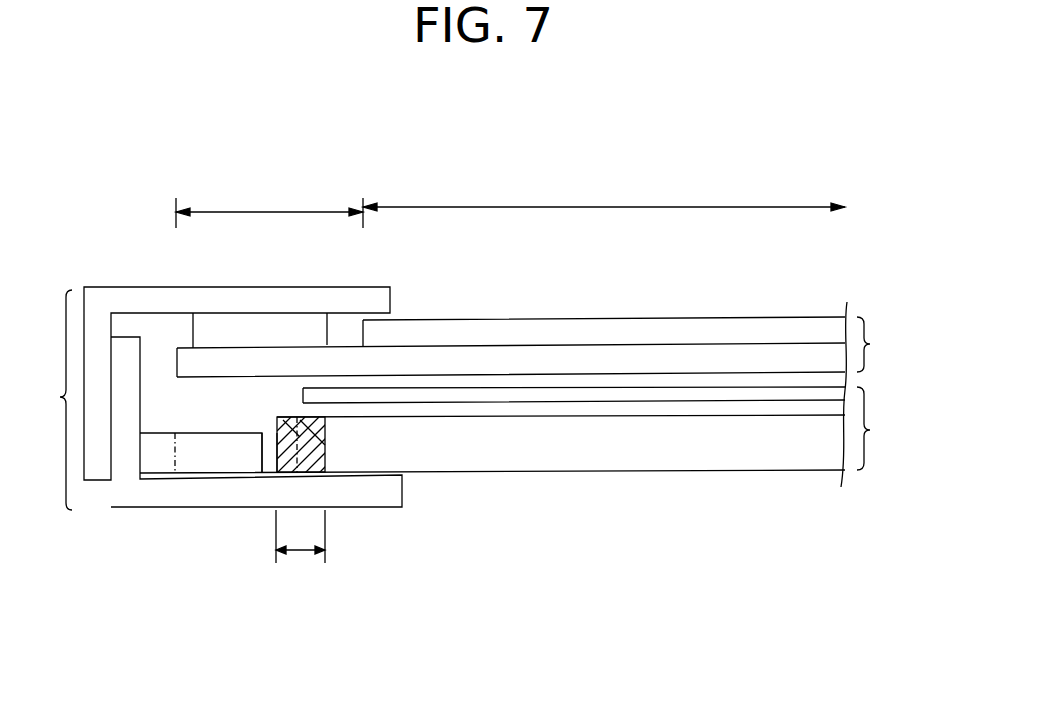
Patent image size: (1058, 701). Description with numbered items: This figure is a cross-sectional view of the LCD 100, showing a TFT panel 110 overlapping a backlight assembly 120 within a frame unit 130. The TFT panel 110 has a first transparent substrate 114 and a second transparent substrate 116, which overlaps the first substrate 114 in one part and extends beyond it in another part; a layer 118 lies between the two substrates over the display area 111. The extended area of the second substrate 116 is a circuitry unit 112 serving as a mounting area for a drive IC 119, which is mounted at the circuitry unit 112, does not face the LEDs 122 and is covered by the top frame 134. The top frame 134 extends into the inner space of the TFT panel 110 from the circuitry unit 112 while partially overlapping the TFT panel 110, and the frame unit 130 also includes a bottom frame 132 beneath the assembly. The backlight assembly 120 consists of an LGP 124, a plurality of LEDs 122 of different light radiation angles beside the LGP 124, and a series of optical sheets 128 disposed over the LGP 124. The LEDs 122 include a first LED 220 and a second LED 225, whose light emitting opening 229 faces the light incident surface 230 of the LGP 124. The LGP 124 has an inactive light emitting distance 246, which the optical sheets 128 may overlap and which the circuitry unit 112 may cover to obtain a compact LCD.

The display device 100 is at (697, 170).
The TFT panel 110 is at (889, 344).
The display area 111 is at (604, 193).
The circuitry unit 112 is at (269, 205).
The first transparent substrate 114 is at (730, 318).
The second transparent substrate 116 is at (607, 362).
The liquid crystal layer 118 is at (668, 345).
The drive IC 119 is at (258, 330).
The backlight assembly 120 is at (889, 428).
The LEDs 122 is at (152, 467).
The LGP 124 is at (665, 453).
The optical sheets 128 is at (749, 402).
The frame unit 130 is at (44, 400).
The bottom chassis 132 is at (118, 494).
The top frame 134 is at (125, 295).
The first LED 220 is at (178, 465).
The second LED 225 is at (277, 452).
The light emitting opening 229 is at (298, 432).
The light incident surface 230 is at (310, 420).
The inactive light emitting distance 246 is at (302, 548).